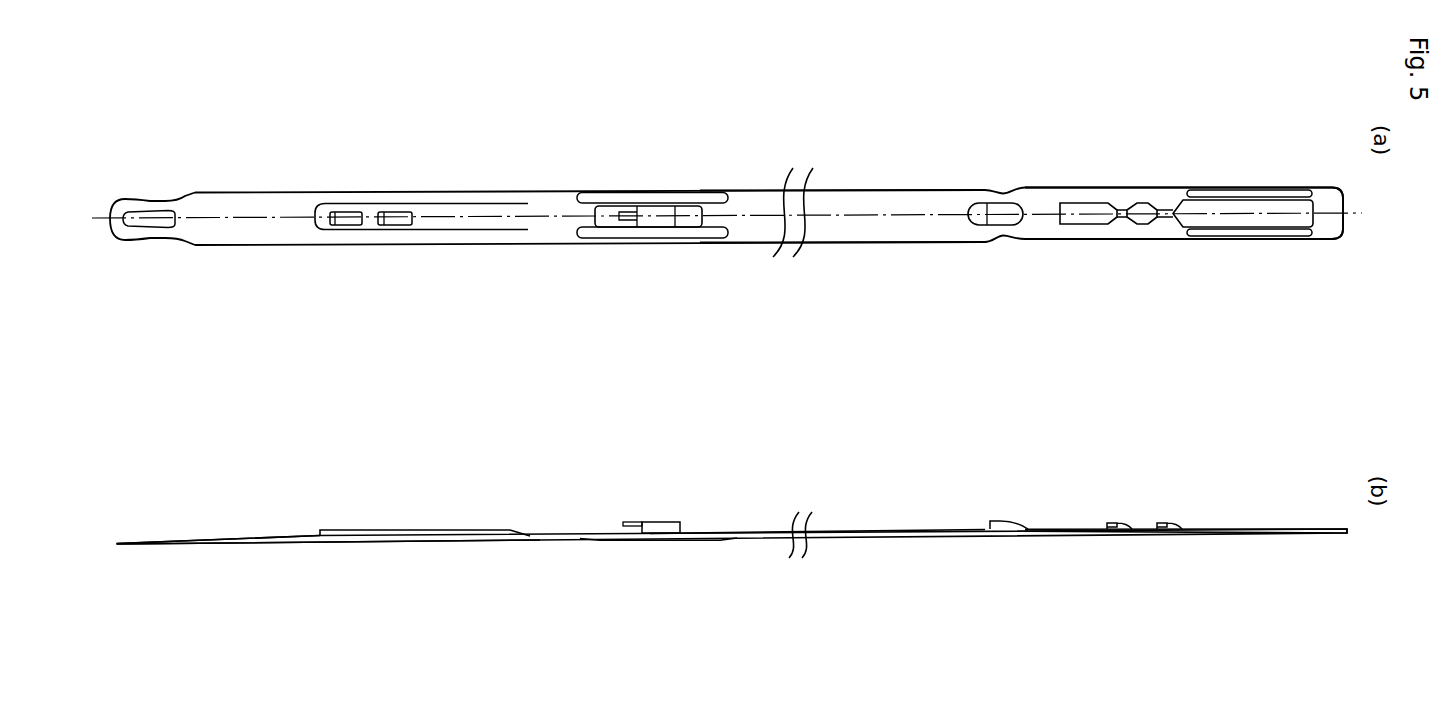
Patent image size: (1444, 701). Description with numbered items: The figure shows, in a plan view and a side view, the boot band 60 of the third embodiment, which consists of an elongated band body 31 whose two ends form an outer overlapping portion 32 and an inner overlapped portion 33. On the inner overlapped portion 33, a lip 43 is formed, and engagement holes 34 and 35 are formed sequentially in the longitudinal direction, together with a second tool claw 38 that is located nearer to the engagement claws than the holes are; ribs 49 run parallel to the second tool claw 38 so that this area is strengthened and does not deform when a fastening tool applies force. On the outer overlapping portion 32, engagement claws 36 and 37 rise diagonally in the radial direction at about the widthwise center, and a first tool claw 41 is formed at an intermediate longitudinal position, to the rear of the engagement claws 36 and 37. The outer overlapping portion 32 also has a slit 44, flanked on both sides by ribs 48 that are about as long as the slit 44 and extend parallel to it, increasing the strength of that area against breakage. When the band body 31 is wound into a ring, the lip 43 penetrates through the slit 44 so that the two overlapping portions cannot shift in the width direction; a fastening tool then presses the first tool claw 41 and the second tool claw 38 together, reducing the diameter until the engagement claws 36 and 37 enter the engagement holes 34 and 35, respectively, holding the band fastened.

The band body 31 is at (848, 183).
The outer overlapping portion 32 is at (1108, 184).
The inner overlapped portion 33 is at (306, 186).
The engagement hole 34 is at (391, 216).
The engagement hole 35 is at (346, 216).
The engagement claw 36 is at (1163, 222).
The engagement claw 37 is at (1118, 221).
The second tool claw 38 is at (655, 210).
The first tool claw 41 is at (1005, 208).
The lip 43 is at (465, 210).
The slit 44 is at (1282, 208).
The rib 48 is at (1205, 192).
The rib 49 is at (607, 197).
The boot band 60 is at (922, 168).